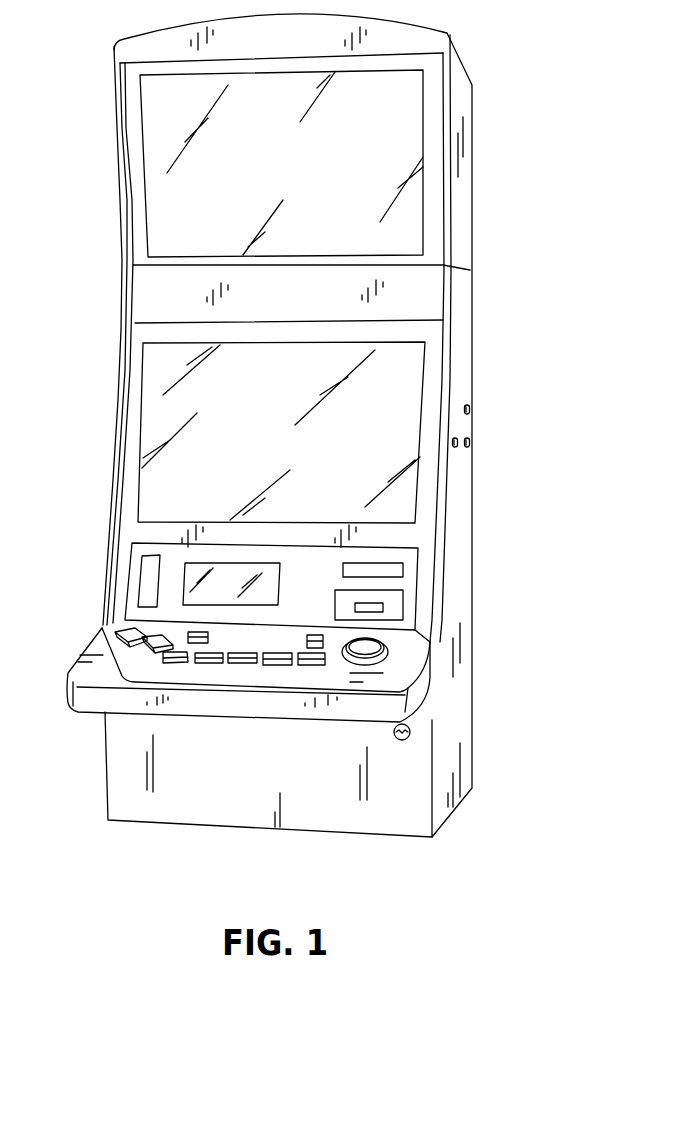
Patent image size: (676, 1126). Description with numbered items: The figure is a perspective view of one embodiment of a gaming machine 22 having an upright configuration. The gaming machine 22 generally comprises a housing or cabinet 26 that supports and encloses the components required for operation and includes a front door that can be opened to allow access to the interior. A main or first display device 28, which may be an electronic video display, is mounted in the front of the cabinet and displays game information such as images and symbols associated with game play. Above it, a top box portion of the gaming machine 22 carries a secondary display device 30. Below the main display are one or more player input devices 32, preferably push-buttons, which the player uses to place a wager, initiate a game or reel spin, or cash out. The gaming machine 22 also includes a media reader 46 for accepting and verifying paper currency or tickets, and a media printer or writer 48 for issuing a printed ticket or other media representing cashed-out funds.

The gaming machine 22 is at (506, 75).
The housing or cabinet 26 is at (453, 503).
The first display device 28 is at (162, 398).
The secondary display device 30 is at (178, 196).
The player input devices 32 is at (112, 630).
The media reader 46 is at (402, 600).
The media printer or writer 48 is at (398, 570).